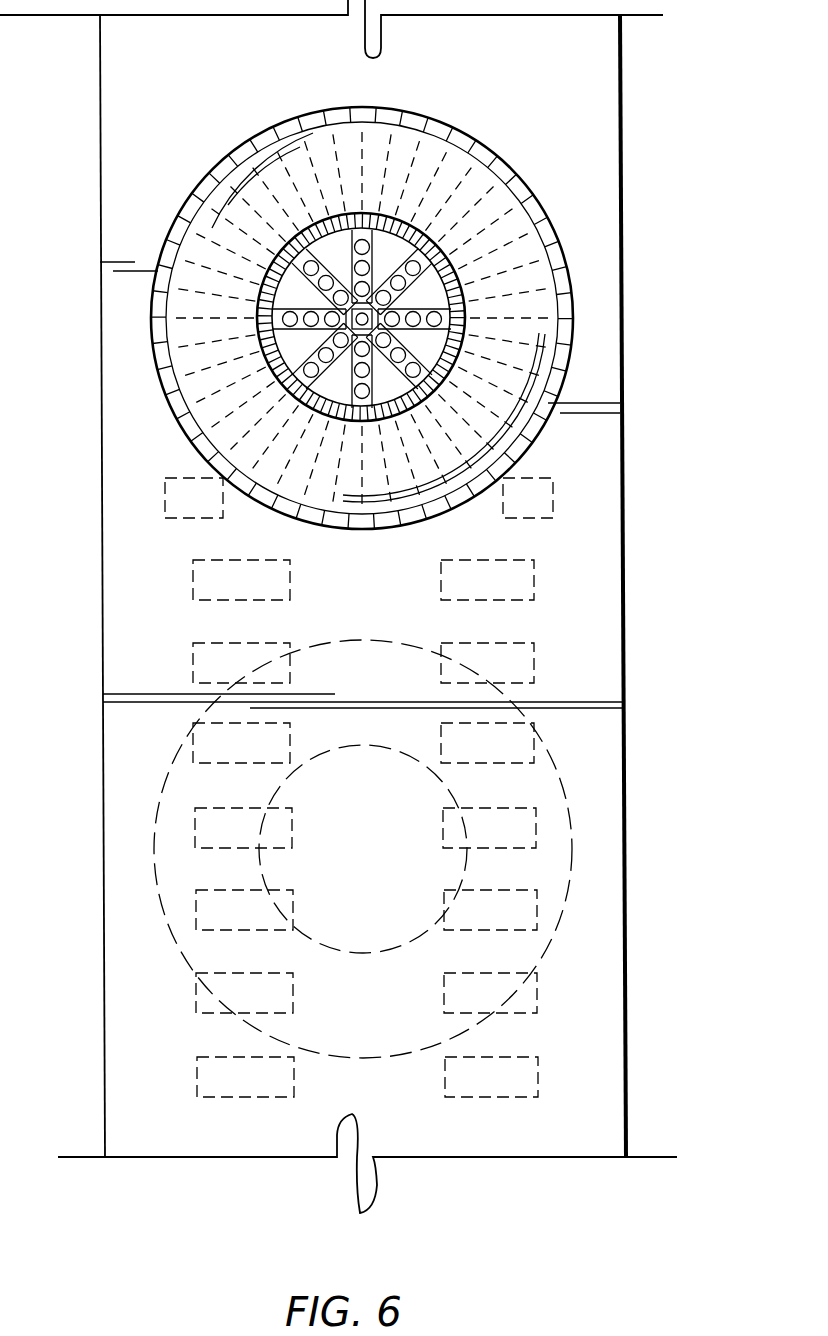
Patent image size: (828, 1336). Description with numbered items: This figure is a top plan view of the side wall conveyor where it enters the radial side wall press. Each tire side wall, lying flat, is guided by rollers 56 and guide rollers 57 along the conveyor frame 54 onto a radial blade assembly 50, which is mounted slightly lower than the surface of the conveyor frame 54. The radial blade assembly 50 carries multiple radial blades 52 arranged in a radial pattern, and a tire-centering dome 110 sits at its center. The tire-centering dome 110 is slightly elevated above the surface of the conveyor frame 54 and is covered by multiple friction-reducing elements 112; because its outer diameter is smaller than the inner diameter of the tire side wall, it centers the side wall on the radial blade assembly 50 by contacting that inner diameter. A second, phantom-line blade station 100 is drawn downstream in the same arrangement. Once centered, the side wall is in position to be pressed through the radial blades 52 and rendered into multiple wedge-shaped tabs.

The radial blade assembly 50 is at (538, 210).
The radial blades 52 is at (510, 190).
The conveyor frame 54 is at (665, 532).
The rollers 56 is at (193, 582).
The guide rollers 57 is at (165, 505).
The distributor section 100 is at (548, 263).
The tire-centering dome 110 is at (415, 273).
The friction-reducing elements 112 is at (357, 251).